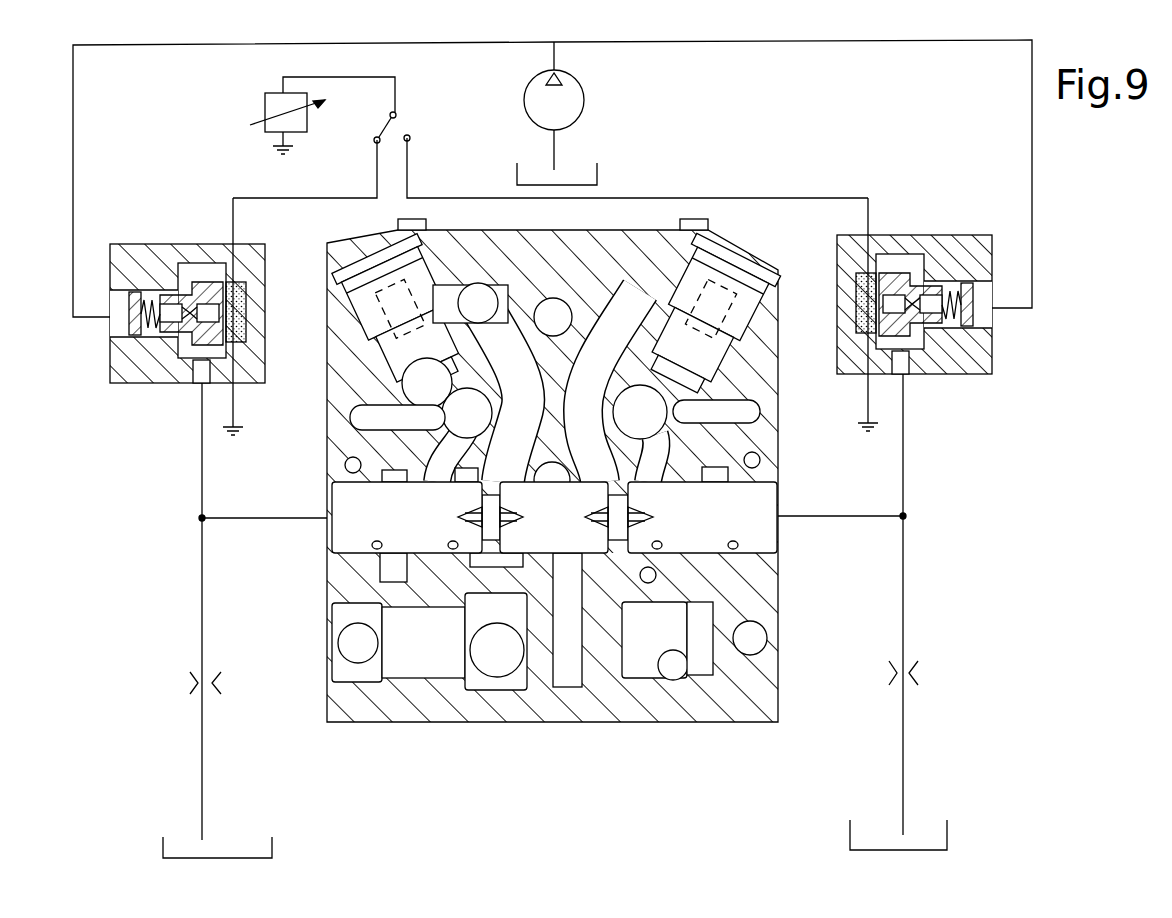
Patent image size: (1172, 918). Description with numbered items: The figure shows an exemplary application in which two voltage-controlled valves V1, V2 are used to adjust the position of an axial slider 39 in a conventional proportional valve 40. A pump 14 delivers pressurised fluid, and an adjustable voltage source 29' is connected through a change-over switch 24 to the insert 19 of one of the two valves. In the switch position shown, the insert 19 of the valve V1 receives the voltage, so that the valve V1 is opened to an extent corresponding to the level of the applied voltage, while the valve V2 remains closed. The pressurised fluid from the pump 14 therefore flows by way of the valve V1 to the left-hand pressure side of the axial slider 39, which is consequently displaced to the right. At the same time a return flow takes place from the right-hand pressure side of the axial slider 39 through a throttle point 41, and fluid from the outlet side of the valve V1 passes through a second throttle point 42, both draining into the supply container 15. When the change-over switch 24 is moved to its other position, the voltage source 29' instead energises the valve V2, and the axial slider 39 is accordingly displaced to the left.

The adjustable voltage source 29' is at (301, 113).
The change-over switch 24 is at (411, 121).
The pump 14 is at (585, 97).
The supply container 15 is at (597, 170).
The valve V1 is at (161, 232).
The valve V2 is at (949, 224).
The insert 19 is at (266, 309).
The proportional valve 40 is at (322, 440).
The axial slider 39 is at (345, 497).
The second throttle point 42 is at (188, 687).
The throttle point 41 is at (918, 677).